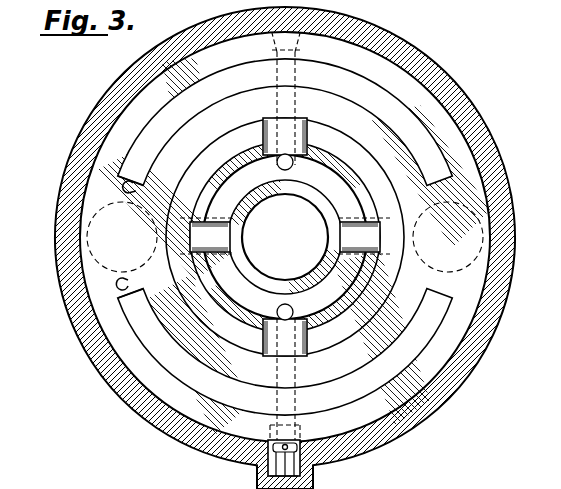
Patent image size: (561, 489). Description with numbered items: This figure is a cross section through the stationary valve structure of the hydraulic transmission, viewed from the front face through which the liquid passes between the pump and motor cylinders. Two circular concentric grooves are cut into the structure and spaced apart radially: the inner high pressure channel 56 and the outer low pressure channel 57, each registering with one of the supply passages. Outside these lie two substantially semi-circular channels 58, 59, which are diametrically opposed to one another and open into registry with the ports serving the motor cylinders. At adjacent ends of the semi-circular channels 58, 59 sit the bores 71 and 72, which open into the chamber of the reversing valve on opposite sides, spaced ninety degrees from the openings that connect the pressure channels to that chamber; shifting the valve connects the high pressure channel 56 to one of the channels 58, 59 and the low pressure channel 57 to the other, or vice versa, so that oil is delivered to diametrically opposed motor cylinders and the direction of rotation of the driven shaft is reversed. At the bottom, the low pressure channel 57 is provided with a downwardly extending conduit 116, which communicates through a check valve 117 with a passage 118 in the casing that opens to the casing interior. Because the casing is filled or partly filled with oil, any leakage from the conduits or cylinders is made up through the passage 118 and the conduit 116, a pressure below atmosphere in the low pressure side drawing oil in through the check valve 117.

The high pressure channel 56 is at (285, 237).
The low pressure channel 57 is at (303, 237).
The semi-circular channel 58 is at (285, 122).
The semi-circular channel 59 is at (285, 352).
The bore 71 is at (130, 186).
The bore 72 is at (125, 285).
The conduit 116 is at (283, 401).
The check valve 117 is at (257, 463).
The passage 118 is at (297, 485).